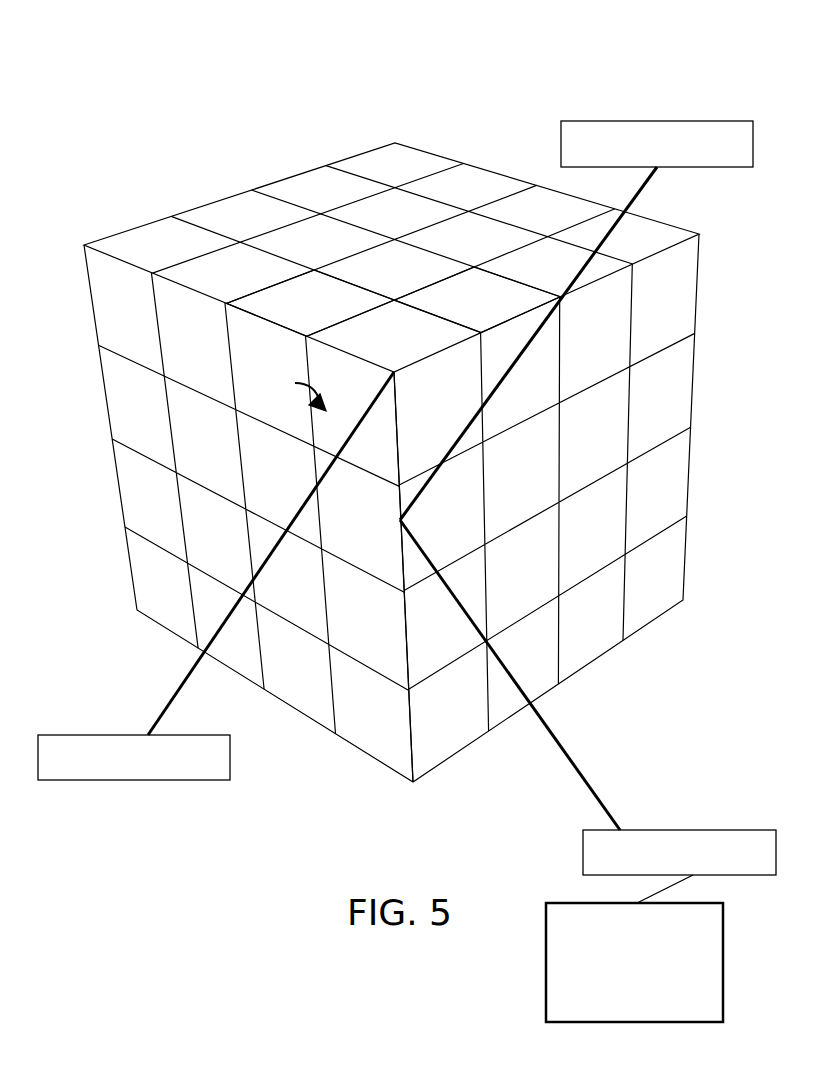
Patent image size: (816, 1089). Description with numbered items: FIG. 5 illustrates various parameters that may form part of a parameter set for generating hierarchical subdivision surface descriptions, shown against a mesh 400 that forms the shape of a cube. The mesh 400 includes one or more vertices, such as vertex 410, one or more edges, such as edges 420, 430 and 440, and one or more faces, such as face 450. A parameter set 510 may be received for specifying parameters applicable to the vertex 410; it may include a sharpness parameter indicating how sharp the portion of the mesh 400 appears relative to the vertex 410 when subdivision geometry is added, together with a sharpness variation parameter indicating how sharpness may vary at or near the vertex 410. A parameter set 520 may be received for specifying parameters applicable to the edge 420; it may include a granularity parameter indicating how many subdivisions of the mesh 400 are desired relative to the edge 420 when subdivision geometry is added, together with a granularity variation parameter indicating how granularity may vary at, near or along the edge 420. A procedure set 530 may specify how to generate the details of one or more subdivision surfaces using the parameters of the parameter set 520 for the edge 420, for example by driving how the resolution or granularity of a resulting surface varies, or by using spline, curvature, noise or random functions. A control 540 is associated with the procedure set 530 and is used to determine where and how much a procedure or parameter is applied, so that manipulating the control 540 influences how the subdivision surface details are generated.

The mesh 400 is at (401, 70).
The vertex 410 is at (395, 373).
The edge 420 is at (400, 528).
The edge 430 is at (275, 313).
The edge 440 is at (515, 313).
The face 450 is at (292, 392).
The parameter set 510 is at (120, 735).
The parameter set 520 is at (652, 121).
The procedure set 530 is at (673, 830).
The control 540 is at (634, 948).